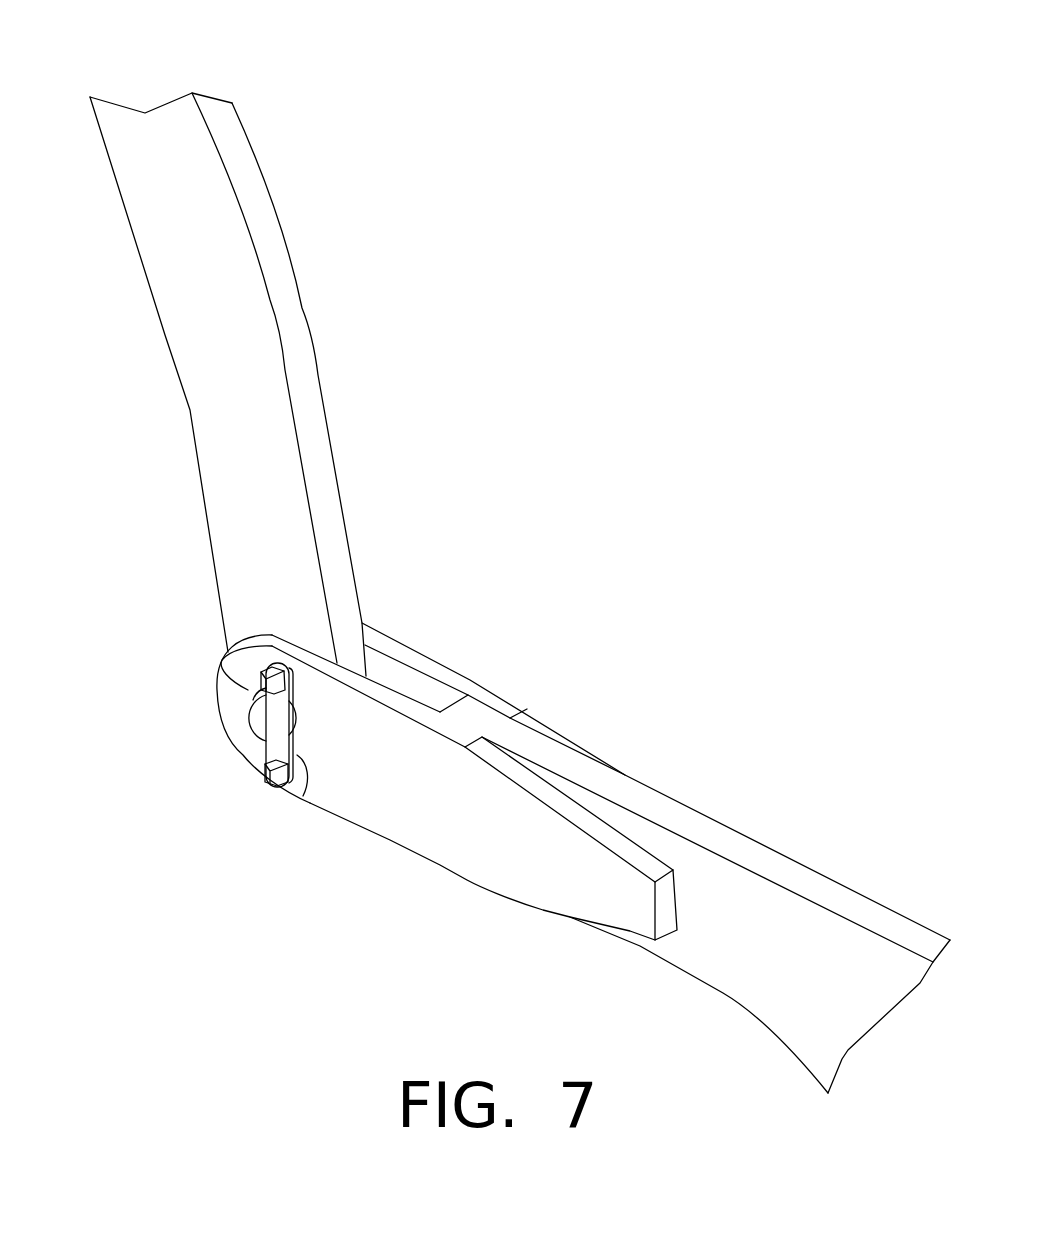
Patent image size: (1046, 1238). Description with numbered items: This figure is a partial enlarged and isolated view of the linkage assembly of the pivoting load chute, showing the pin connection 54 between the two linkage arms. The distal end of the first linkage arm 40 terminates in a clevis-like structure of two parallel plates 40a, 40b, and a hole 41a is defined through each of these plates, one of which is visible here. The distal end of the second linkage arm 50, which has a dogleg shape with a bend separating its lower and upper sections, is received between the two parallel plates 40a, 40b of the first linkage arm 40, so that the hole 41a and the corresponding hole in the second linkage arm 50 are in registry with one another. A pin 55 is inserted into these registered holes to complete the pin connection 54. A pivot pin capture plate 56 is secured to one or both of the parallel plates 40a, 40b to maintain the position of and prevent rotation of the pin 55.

The first linkage arm 40 is at (723, 995).
The parallel plate 40a is at (490, 891).
The parallel plate 40b is at (555, 735).
The hole 41a is at (228, 655).
The second linkage arm 50 is at (248, 172).
The pin connection 54 is at (188, 739).
The pin 55 is at (255, 745).
The pivot pin capture plate 56 is at (292, 758).